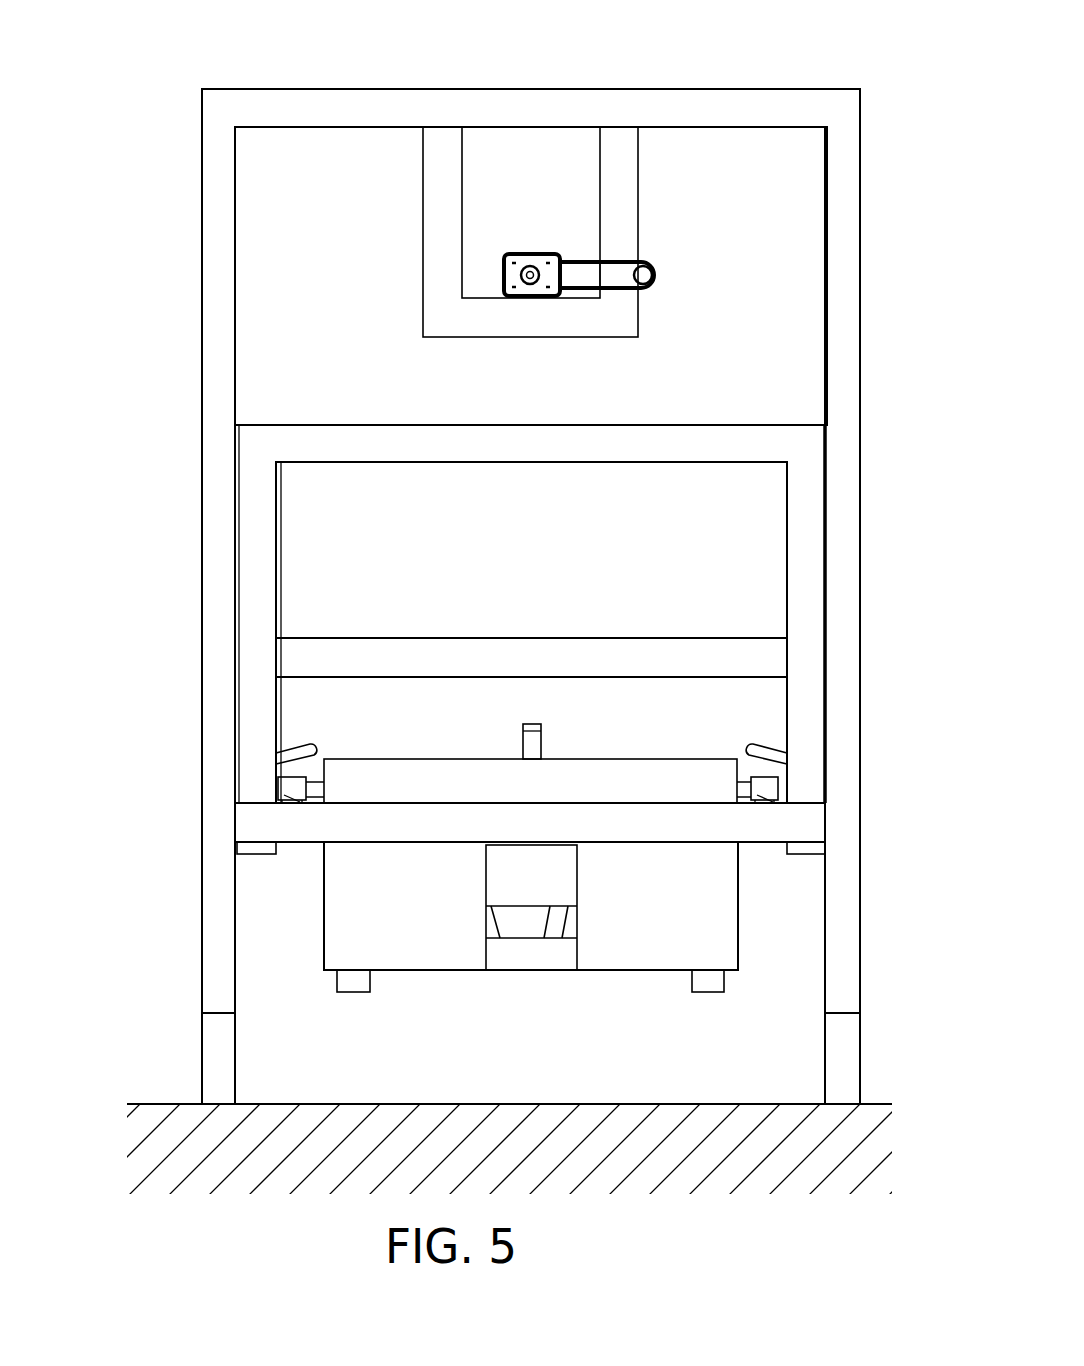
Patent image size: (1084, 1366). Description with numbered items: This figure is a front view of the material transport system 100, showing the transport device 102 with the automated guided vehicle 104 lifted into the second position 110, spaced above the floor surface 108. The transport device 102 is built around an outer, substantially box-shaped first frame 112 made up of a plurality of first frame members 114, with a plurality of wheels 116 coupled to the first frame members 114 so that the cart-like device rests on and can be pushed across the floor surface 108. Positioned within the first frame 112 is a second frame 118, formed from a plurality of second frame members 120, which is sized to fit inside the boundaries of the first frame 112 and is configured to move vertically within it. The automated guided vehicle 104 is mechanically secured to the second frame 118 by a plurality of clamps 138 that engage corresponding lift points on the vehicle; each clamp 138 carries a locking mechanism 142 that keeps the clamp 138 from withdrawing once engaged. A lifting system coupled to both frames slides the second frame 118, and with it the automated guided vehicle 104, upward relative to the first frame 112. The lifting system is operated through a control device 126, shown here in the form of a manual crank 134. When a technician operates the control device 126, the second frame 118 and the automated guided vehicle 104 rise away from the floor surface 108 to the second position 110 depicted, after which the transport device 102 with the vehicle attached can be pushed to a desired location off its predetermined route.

The material transport system 100 is at (112, 86).
The transport device 102 is at (136, 537).
The automated guided vehicle (AGV) 104 is at (665, 889).
The floor surface 108 is at (873, 1104).
The second position 110 is at (284, 914).
The first frame 112 is at (180, 326).
The first frame members 114 is at (215, 257).
The wheels 116 is at (202, 1058).
The second frame 118 is at (212, 591).
The second frame members 120 is at (808, 513).
The control device 126 is at (598, 248).
The manual crank 134 is at (655, 275).
The clamps 138 is at (765, 800).
The locking mechanism 142 is at (762, 752).